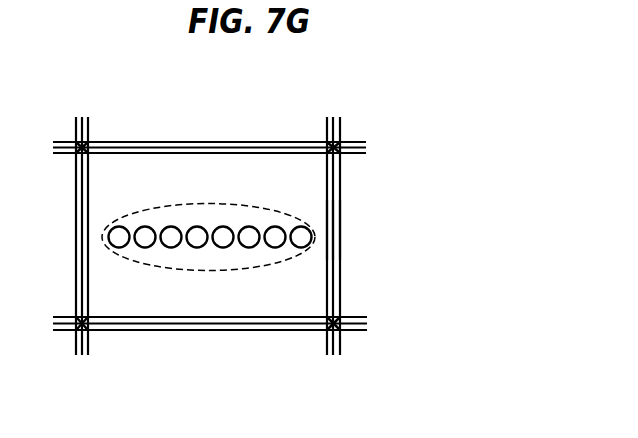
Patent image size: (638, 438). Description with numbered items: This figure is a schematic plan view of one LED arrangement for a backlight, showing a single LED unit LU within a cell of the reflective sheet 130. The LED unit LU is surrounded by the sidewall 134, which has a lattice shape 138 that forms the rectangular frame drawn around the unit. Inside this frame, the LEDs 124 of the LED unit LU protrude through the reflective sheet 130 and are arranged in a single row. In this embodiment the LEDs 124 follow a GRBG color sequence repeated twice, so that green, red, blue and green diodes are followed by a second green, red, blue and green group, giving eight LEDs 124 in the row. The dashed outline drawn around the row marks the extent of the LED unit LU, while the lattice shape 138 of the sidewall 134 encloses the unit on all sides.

The reflective sheet 130 is at (233, 363).
The sidewall 134 is at (342, 222).
The LEDs 124 is at (275, 226).
The lattice shape 138 is at (155, 177).
The LED unit LU is at (208, 203).